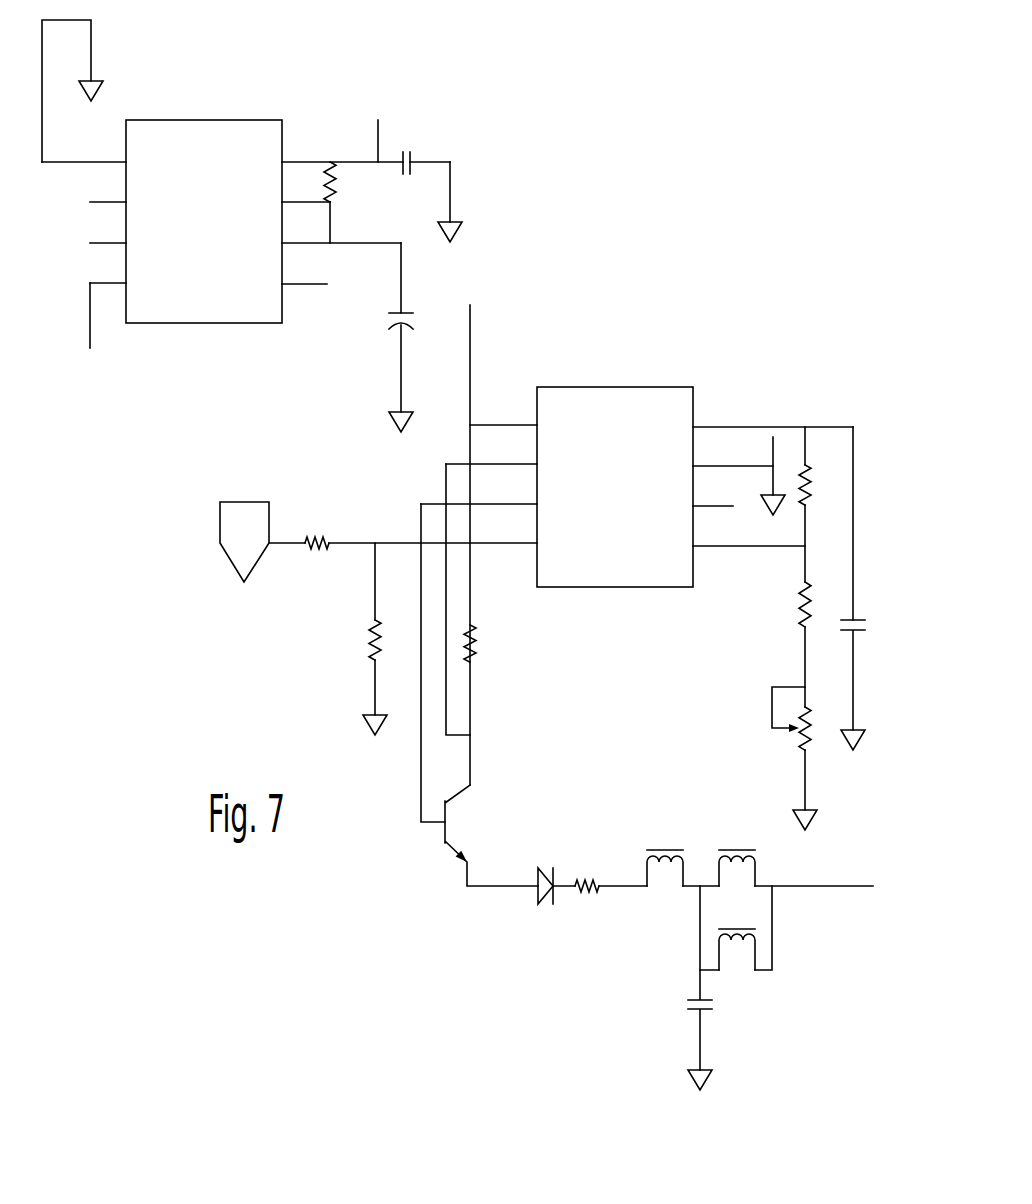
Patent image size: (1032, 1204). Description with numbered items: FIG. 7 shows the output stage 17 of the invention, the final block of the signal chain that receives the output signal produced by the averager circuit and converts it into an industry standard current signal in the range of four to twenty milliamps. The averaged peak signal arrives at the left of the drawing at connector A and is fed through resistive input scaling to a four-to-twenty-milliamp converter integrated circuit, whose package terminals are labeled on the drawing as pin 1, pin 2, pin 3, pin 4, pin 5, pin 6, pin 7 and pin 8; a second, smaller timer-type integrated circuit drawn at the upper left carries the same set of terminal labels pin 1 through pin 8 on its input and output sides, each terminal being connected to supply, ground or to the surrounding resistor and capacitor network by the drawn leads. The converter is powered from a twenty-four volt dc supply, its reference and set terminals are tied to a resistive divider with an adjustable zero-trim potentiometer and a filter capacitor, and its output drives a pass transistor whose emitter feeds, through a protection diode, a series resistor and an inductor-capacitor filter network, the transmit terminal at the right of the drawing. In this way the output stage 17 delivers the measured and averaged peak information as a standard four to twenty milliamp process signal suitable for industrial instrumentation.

The output stage 17 is at (750, 110).
The pin 1 is at (429, 475).
The pin 2 is at (447, 456).
The pin 3 is at (453, 465).
The pin 4 is at (313, 405).
The pin 5 is at (543, 404).
The pin 6 is at (507, 363).
The pin 7 is at (527, 323).
The pin 8 is at (567, 283).